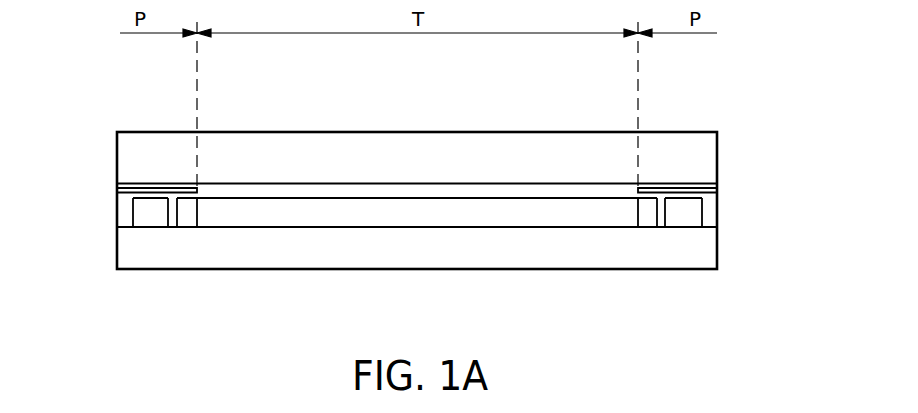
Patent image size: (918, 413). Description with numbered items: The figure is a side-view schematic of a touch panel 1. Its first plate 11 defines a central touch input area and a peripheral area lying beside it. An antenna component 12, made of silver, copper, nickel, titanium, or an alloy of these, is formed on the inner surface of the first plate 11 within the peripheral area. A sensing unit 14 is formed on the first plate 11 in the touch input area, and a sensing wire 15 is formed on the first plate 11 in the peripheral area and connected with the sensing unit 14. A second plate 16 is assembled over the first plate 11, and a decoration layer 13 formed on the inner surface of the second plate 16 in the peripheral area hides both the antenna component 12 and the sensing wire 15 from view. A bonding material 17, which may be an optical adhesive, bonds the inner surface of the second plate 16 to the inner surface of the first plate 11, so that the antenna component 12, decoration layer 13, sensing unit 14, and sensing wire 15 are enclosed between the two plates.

The touch panel 1 is at (92, 129).
The first plate 11 is at (707, 251).
The antenna component 12 is at (692, 213).
The decoration layer 13 is at (712, 190).
The sensing unit 14 is at (567, 222).
The sensing wire 15 is at (648, 220).
The second plate 16 is at (487, 131).
The bonding material 17 is at (342, 190).